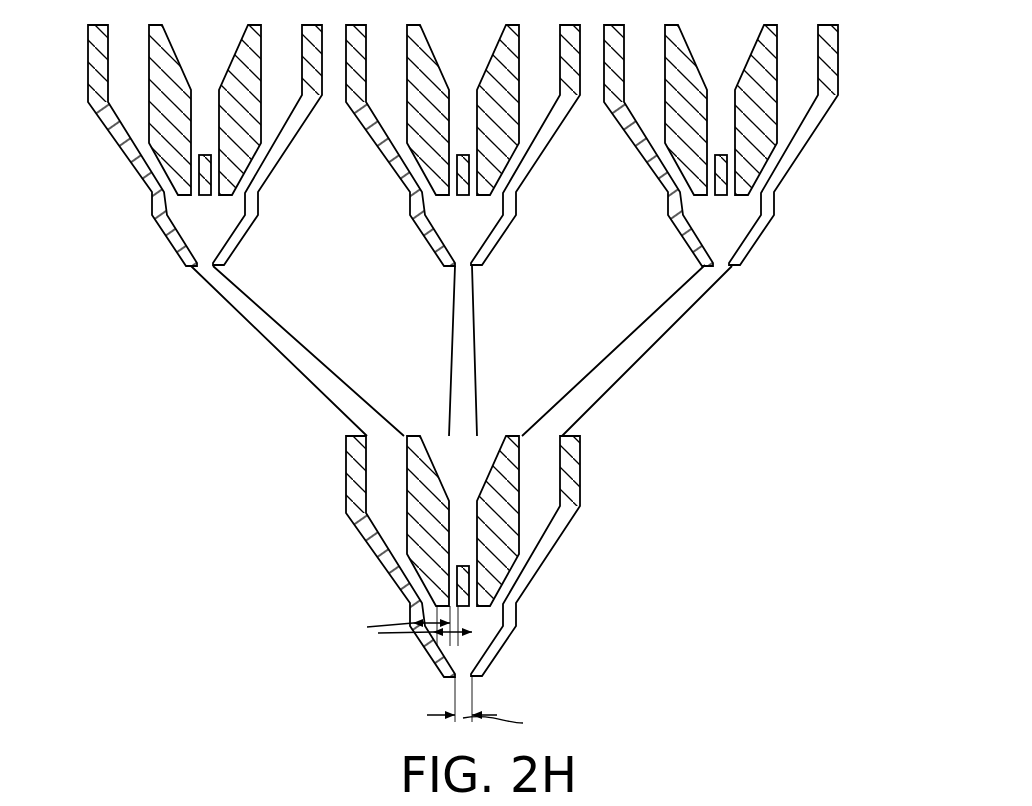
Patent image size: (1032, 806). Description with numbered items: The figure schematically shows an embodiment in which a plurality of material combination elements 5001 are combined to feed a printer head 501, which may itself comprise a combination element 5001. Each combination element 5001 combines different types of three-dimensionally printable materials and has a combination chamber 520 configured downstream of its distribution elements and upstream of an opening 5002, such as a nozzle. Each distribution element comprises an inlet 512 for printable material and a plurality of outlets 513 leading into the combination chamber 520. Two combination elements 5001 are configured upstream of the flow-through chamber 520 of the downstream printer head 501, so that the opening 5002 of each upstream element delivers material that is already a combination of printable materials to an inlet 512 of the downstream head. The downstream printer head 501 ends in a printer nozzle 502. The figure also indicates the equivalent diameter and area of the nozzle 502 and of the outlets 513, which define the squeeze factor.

The printer head 501 is at (476, 388).
The material combination element 5001 is at (476, 366).
The opening 5002 is at (207, 270).
The outlets 513 is at (170, 197).
The combination chamber 520 is at (467, 228).
The inlet 512 is at (540, 483).
The printer nozzle 502 is at (468, 678).